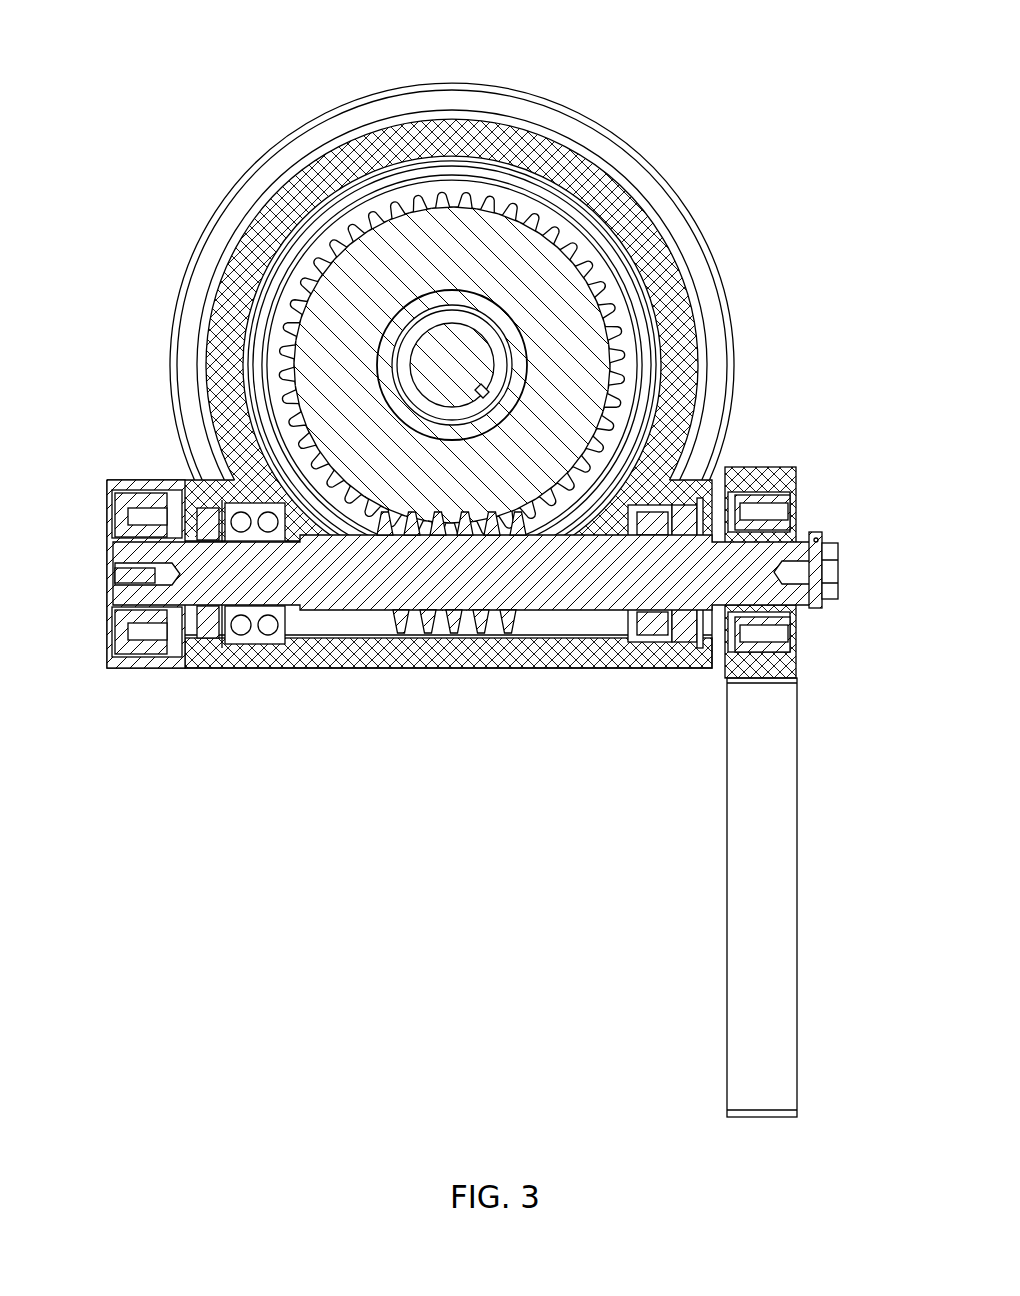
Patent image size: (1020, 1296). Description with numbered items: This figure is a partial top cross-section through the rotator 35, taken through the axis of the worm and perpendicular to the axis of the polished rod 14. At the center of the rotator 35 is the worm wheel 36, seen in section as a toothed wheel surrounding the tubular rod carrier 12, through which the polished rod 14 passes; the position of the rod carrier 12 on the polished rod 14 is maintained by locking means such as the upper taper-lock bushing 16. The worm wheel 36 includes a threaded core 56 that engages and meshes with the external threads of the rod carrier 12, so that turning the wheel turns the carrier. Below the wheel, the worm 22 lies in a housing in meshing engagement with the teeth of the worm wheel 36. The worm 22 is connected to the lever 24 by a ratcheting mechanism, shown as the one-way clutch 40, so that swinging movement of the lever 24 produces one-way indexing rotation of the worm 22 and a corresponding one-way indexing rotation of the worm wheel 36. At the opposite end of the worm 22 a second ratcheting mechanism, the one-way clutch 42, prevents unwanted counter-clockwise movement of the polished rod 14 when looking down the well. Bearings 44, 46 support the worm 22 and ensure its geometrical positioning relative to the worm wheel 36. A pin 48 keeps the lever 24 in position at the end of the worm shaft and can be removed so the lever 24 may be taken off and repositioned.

The rotator 35 is at (150, 43).
The rod carrier 12 is at (430, 300).
The polished rod 14 is at (453, 340).
The upper taper-lock bushing 16 is at (490, 335).
The worm wheel 36 is at (565, 330).
The threaded core 56 is at (380, 398).
The worm 22 is at (405, 605).
The one-way clutch 40 is at (792, 492).
The one-way clutch 42 is at (132, 650).
The bearing 44 is at (252, 640).
The bearing 46 is at (650, 640).
The pin 48 is at (818, 610).
The lever 24 is at (775, 893).